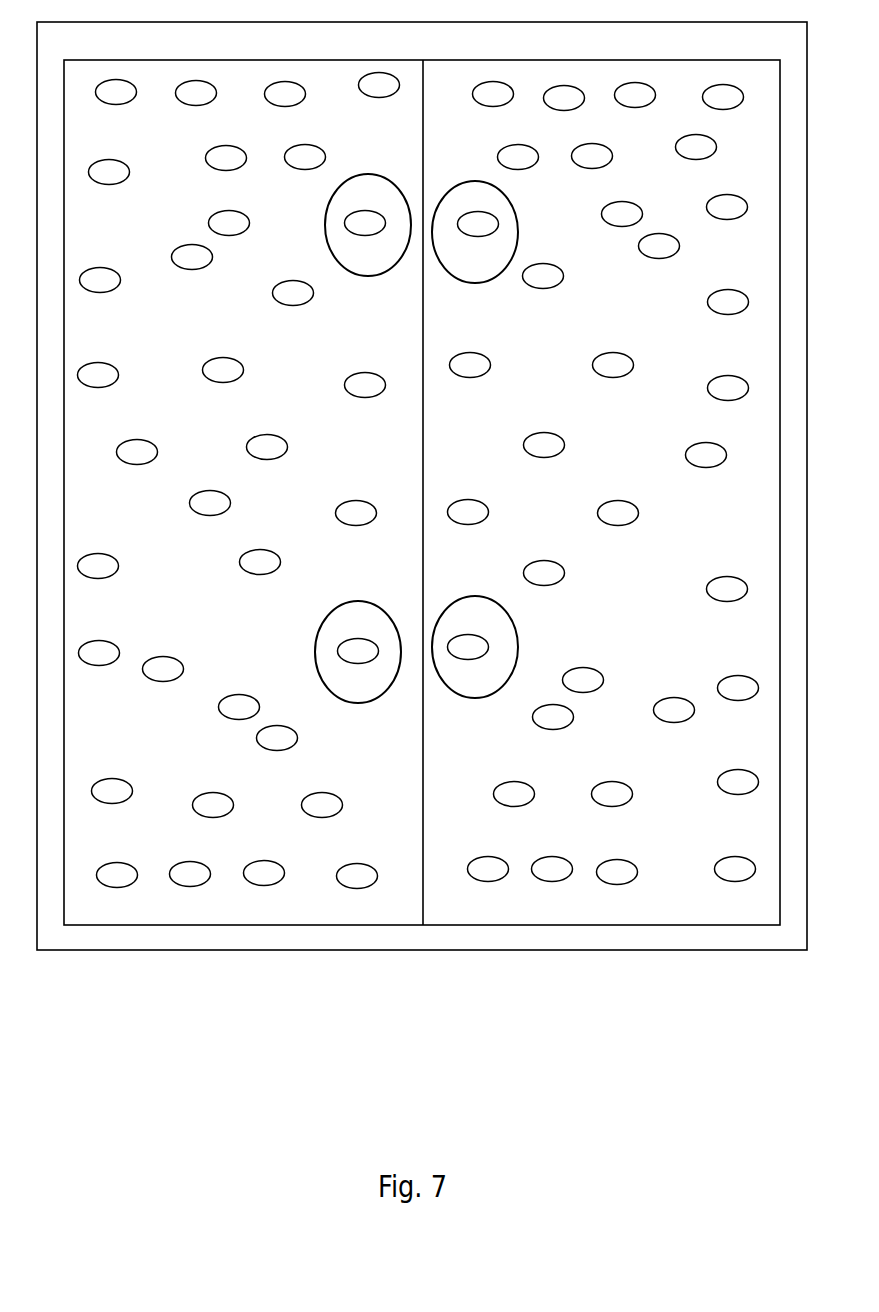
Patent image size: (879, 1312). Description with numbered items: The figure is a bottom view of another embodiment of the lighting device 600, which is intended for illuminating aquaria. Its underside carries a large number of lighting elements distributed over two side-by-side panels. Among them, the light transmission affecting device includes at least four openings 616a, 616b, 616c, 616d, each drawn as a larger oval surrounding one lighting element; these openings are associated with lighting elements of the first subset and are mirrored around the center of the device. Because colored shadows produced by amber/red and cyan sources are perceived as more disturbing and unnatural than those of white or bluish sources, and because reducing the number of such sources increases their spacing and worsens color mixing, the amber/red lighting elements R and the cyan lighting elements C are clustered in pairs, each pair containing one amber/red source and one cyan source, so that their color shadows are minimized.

The lighting device 600 is at (430, 1068).
The opening 616a is at (407, 130).
The opening 616b is at (392, 564).
The opening 616c is at (567, 333).
The opening 616d is at (448, 688).
The amber/red lighting element R is at (237, 211).
The cyan lighting element C is at (210, 257).